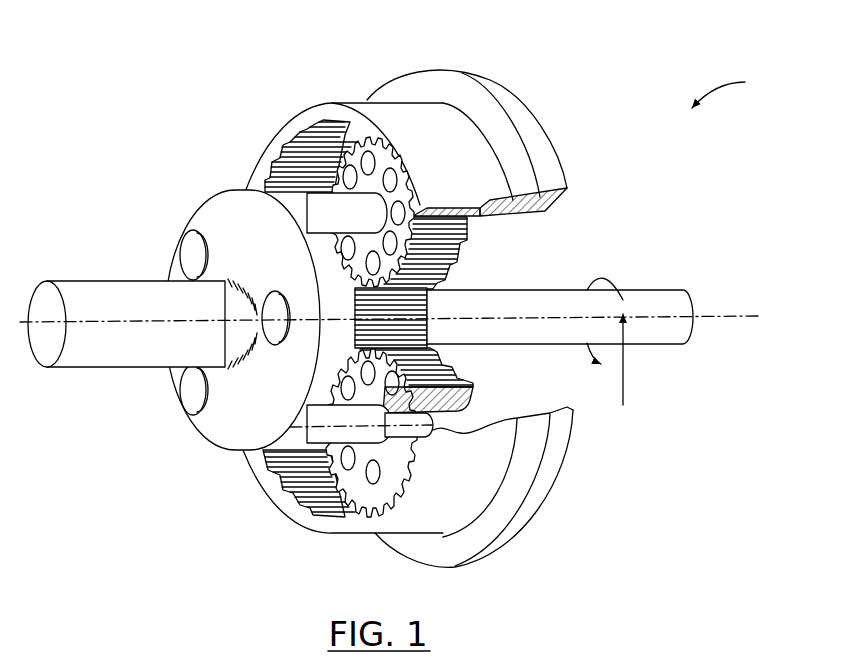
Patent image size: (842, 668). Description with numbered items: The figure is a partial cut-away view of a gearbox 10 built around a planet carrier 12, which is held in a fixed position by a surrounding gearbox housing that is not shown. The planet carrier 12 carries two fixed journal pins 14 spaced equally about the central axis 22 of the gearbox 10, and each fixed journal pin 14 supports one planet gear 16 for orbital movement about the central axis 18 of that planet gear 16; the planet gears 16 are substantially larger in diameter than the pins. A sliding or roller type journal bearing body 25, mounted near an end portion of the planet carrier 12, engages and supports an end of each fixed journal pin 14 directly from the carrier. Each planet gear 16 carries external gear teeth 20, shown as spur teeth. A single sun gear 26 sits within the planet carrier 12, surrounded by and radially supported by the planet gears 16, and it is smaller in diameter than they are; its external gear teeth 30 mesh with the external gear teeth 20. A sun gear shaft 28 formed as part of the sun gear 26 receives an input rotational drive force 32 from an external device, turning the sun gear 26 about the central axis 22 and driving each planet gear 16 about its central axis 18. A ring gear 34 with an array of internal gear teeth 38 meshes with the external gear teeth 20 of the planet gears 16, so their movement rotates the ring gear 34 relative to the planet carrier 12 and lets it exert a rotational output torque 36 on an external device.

The gearbox 10 is at (737, 86).
The planet carrier 12 is at (116, 349).
The fixed journal pin 14 is at (337, 211).
The planet gear 16 is at (382, 170).
The central axis 18 is at (452, 420).
The external gear teeth 20 is at (434, 257).
The central axis 22 is at (735, 315).
The journal bearing body 25 is at (405, 446).
The sun gear 26 is at (423, 306).
The sun gear shaft 28 is at (650, 300).
The external gear teeth 30 is at (420, 307).
The input rotational drive force 32 is at (624, 374).
The ring gear 34 is at (467, 130).
The rotational output torque 36 is at (466, 175).
The internal gear teeth 38 is at (322, 160).